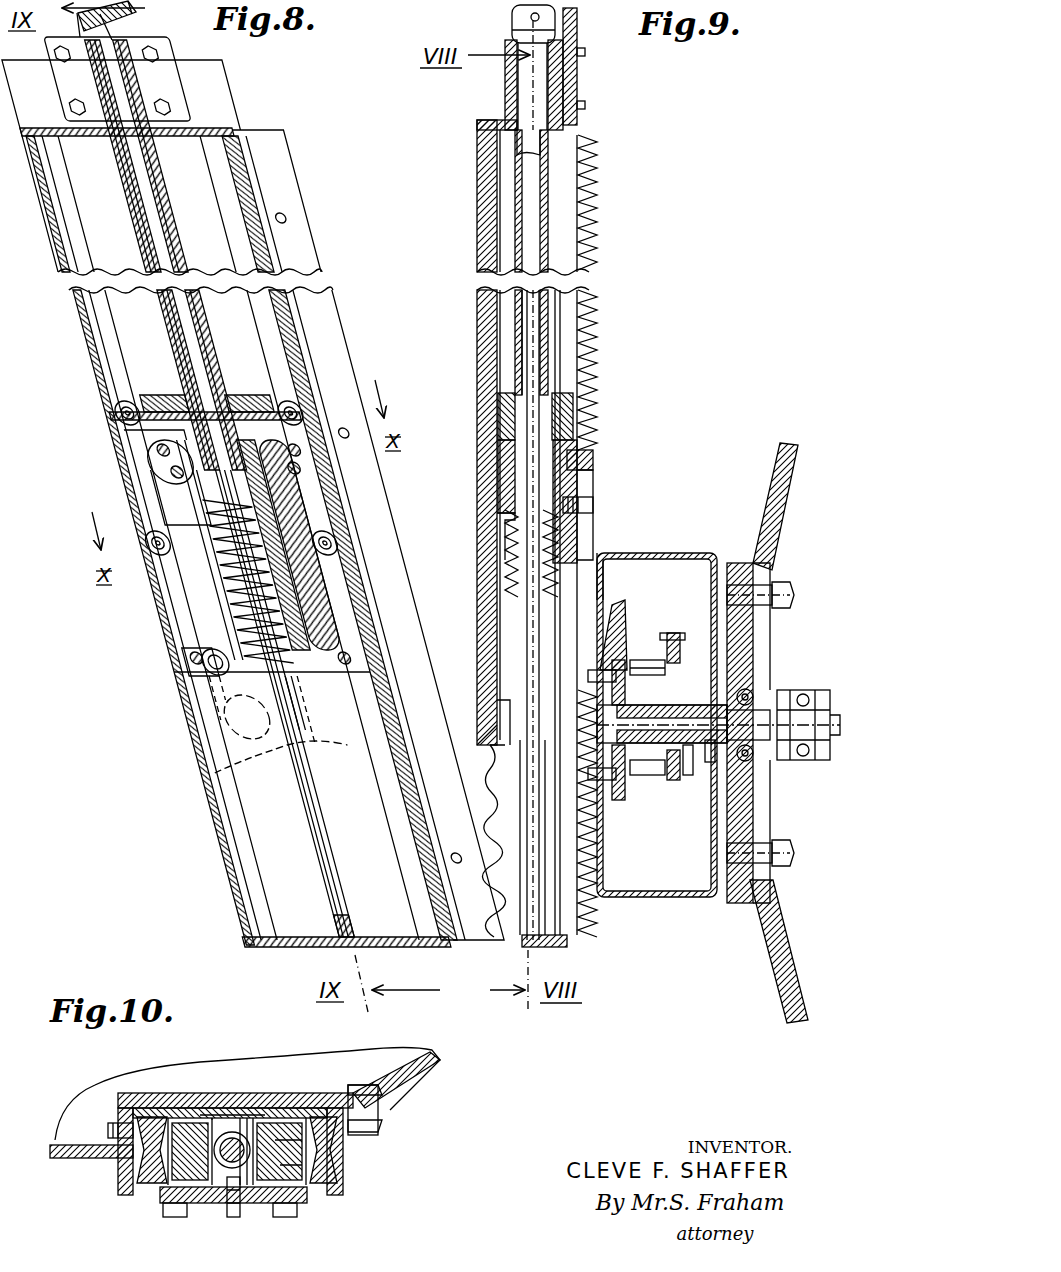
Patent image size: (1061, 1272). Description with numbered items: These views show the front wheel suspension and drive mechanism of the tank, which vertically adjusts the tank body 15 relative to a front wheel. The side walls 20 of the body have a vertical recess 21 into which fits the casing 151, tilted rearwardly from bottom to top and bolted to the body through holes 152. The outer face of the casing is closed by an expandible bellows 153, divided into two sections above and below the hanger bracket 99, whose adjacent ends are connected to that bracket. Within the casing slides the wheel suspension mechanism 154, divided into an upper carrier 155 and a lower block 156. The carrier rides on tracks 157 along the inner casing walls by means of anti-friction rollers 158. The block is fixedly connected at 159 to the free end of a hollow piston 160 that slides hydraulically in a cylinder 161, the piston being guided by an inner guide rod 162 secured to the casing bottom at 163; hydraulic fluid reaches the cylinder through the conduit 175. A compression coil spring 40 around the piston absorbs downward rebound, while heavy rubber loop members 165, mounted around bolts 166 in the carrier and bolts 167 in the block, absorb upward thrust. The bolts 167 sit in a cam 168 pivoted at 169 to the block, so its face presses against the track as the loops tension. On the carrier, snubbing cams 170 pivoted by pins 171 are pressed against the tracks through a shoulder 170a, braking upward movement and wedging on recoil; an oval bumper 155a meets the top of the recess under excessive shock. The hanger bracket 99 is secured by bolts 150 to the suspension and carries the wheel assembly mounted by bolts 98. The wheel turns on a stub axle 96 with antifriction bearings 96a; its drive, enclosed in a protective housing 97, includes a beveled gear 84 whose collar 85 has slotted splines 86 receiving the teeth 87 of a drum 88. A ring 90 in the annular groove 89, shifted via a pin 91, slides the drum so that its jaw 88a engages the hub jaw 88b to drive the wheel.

In FIG. 9, the tank body 15 is at (577, 30).
In FIG. 10, the tank body 15 is at (440, 1072).
In FIG. 10, the side walls 20 is at (75, 1158).
In FIG. 9, the vertical recess 21 is at (580, 140).
In FIG. 10, the vertical recess 21 is at (205, 1115).
In FIG. 8, the compression coil spring 40 is at (179, 581).
In FIG. 9, the compression coil spring 40 is at (505, 575).
In FIG. 9, the beveled gear 84 is at (614, 612).
In FIG. 9, the collar 85 is at (622, 660).
In FIG. 9, the slotted splines 86 is at (642, 660).
In FIG. 9, the teeth 87 is at (625, 790).
In FIG. 9, the drum 88 is at (650, 775).
In FIG. 9, the dog clutch jaw 88a is at (718, 723).
In FIG. 9, the dog clutch jaw 88b is at (728, 722).
In FIG. 9, the annular groove 89 is at (680, 785).
In FIG. 9, the ring 90 is at (704, 762).
In FIG. 9, the pin 91 is at (673, 633).
In FIG. 9, the spindle or stub axle 96 is at (792, 755).
In FIG. 9, the antifriction bearings 96a is at (752, 690).
In FIG. 9, the protective housing 97 is at (678, 553).
In FIG. 9, the bolts 98 is at (590, 676).
In FIG. 8, the hanger bracket 99 is at (281, 759).
In FIG. 9, the hanger bracket 99 is at (592, 483).
In FIG. 10, the hanger bracket 99 is at (200, 1203).
In FIG. 9, the bolts 150 is at (593, 505).
In FIG. 10, the bolts 150 is at (233, 1217).
In FIG. 8, the casing 151 is at (127, 617).
In FIG. 9, the casing 151 is at (500, 208).
In FIG. 10, the casing 151 is at (128, 1195).
In FIG. 8, the holes 152 is at (288, 215).
In FIG. 10, the holes 152 is at (110, 1128).
In FIG. 9, the bellows 153 is at (590, 210).
In FIG. 9, the wheel suspension mechanism 154 is at (505, 492).
In FIG. 10, the wheel suspension mechanism 154 is at (228, 1120).
In FIG. 9, the carrier 155 is at (590, 455).
In FIG. 8, the resilient oval bumper 155a is at (144, 395).
In FIG. 9, the resilient oval bumper 155a is at (570, 395).
In FIG. 8, the block 156 is at (325, 703).
In FIG. 9, the block 156 is at (510, 719).
In FIG. 8, the tracks 157 is at (275, 615).
In FIG. 10, the tracks 157 is at (327, 1168).
In FIG. 8, the anti-friction rollers 158 is at (233, 461).
In FIG. 10, the anti-friction rollers 158 is at (145, 1172).
In FIG. 8, the connection 159 is at (332, 710).
In FIG. 8, the hollow piston 160 is at (72, 178).
In FIG. 9, the hollow piston 160 is at (538, 333).
In FIG. 8, the cylinder 161 is at (91, 225).
In FIG. 9, the cylinder 161 is at (550, 310).
In FIG. 8, the guide tube or rod 162 is at (316, 703).
In FIG. 9, the guide tube or rod 162 is at (545, 760).
In FIG. 10, the guide tube or rod 162 is at (235, 1140).
In FIG. 8, the securing point 163 is at (372, 921).
In FIG. 8, the rubber loop members 165 is at (233, 550).
In FIG. 10, the rubber loop members 165 is at (178, 1125).
In FIG. 8, the bolts 166 is at (215, 418).
In FIG. 10, the bolts 166 is at (305, 1172).
In FIG. 8, the bolts 167 is at (237, 698).
In FIG. 8, the cam 168 is at (260, 645).
In FIG. 8, the pivot 169 is at (268, 676).
In FIG. 8, the cams 170 is at (257, 468).
In FIG. 8, the shoulder 170a is at (344, 545).
In FIG. 8, the pins 171 is at (214, 462).
In FIG. 8, the conduit 175 is at (136, 14).
In FIG. 9, the conduit 175 is at (512, 15).